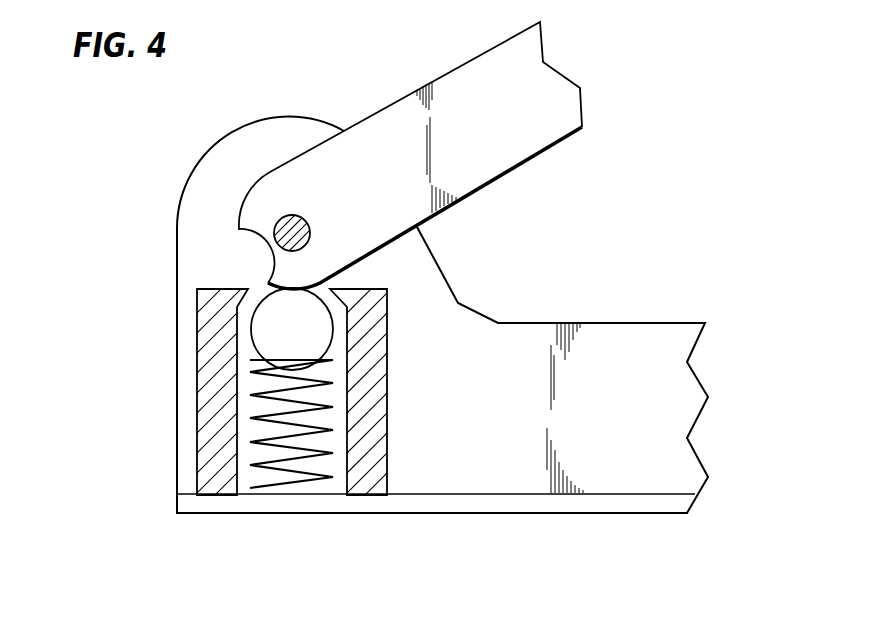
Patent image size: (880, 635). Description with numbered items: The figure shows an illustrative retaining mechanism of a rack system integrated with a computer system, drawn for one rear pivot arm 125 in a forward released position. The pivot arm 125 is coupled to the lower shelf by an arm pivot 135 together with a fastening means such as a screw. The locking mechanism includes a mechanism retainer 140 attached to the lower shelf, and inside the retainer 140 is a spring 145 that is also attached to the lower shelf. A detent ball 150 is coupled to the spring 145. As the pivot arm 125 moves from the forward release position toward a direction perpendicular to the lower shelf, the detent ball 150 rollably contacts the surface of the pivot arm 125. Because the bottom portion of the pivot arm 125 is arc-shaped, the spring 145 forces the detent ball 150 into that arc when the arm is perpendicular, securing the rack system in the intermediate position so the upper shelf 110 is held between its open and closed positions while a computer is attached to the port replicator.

The upper shelf 110 is at (502, 470).
The pivot arm 125 is at (465, 100).
The arm pivot 135 is at (273, 228).
The mechanism retainer 140 is at (215, 400).
The spring 145 is at (283, 472).
The detent ball 150 is at (272, 320).